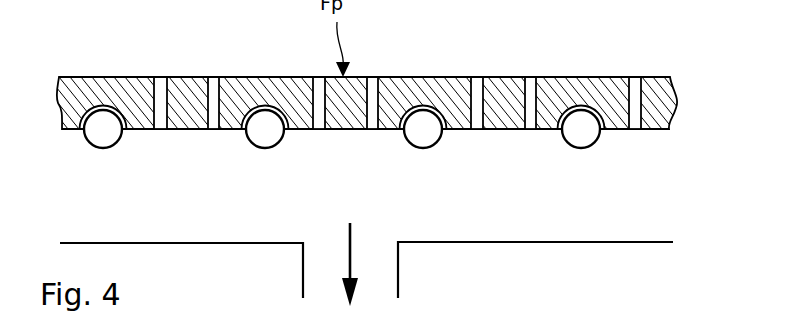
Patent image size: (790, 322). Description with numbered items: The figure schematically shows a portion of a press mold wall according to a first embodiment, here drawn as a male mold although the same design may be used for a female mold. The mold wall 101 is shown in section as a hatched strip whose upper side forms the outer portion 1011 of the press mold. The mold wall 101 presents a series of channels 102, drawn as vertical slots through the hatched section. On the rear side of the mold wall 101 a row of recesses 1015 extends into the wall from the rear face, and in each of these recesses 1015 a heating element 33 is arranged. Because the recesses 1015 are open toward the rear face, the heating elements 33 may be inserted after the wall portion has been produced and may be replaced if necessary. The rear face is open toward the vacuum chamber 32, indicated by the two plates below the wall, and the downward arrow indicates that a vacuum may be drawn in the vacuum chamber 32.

The mold wall 101 is at (440, 77).
The outer portion 1011 is at (603, 77).
The channels 102 is at (210, 77).
The heating elements 33 is at (103, 148).
The recesses 1015 is at (128, 130).
The vacuum chamber 32 is at (395, 213).